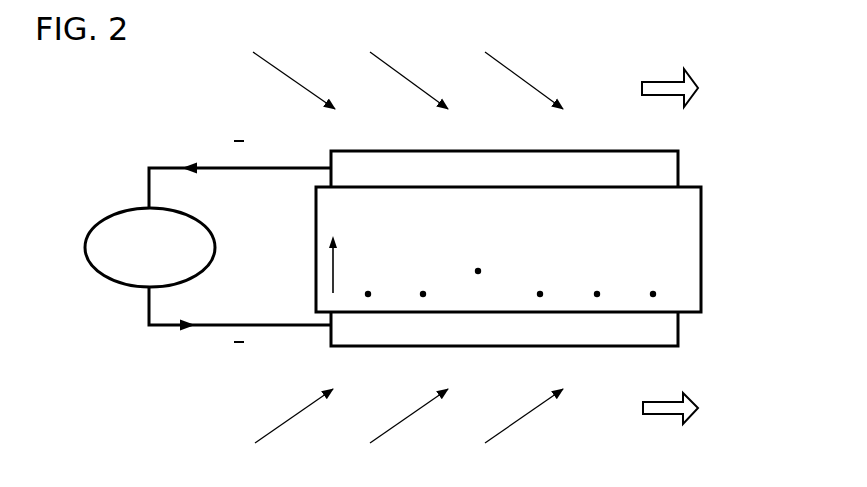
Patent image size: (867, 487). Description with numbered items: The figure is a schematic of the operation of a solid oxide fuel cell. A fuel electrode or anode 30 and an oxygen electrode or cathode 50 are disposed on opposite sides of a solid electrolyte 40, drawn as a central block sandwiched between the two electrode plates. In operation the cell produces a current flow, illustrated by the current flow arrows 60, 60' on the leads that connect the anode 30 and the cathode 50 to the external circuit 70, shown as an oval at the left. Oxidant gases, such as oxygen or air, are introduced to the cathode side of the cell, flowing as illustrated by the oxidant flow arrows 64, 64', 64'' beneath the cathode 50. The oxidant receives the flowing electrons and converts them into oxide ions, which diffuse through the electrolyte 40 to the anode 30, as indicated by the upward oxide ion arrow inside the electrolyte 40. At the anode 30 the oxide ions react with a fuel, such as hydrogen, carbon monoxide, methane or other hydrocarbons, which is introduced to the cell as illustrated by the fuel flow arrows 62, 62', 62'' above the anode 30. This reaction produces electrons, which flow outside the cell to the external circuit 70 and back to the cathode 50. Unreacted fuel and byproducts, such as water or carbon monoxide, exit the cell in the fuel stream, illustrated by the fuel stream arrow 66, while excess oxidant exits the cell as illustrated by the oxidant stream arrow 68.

The anode 30 is at (678, 164).
The solid electrolyte 40 is at (701, 228).
The cathode 50 is at (678, 330).
The current flow arrow 60 is at (240, 158).
The current flow arrow 60' is at (238, 341).
The fuel flow arrow 62 is at (279, 68).
The fuel flow arrow 62' is at (394, 68).
The fuel flow arrow 62'' is at (509, 68).
The oxidant flow arrow 64 is at (279, 431).
The oxidant flow arrow 64' is at (397, 431).
The oxidant flow arrow 64'' is at (512, 431).
The fuel stream arrow 66 is at (660, 80).
The oxidant stream arrow 68 is at (660, 415).
The external circuit 70 is at (108, 217).